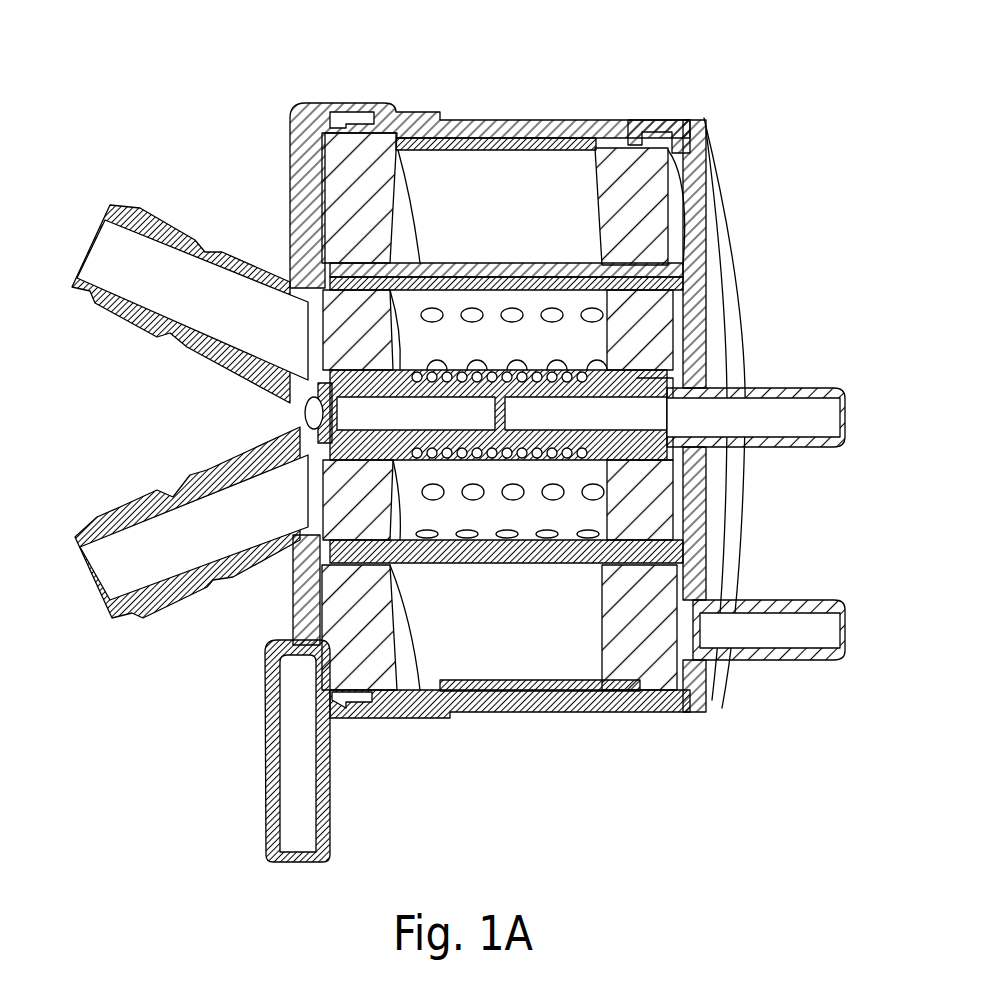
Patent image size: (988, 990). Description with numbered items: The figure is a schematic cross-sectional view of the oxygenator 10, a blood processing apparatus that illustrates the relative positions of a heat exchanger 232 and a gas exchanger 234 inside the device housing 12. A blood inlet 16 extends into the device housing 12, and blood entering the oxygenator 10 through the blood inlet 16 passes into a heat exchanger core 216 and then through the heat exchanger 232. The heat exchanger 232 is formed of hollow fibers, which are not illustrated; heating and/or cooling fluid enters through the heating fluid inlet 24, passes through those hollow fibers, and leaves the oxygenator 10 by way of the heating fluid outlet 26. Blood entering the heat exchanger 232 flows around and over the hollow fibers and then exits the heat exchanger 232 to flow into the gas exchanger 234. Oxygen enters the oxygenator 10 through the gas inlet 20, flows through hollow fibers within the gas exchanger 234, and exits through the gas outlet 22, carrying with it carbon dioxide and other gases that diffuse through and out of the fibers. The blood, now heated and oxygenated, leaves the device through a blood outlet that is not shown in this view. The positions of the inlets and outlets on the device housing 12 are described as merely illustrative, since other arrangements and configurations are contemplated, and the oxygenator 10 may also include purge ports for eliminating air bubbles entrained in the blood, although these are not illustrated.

The oxygenator 10 is at (808, 96).
The device housing 12 is at (718, 217).
The blood inlet 16 is at (820, 410).
The gas inlet 20 is at (828, 630).
The gas outlet 22 is at (325, 835).
The heating fluid inlet 24 is at (98, 253).
The heating fluid outlet 26 is at (115, 568).
The heat exchanger core 216 is at (432, 410).
The heat exchanger 232 is at (560, 340).
The gas exchanger 234 is at (487, 188).